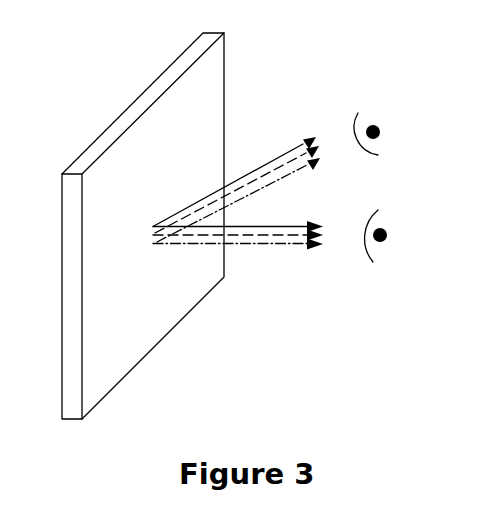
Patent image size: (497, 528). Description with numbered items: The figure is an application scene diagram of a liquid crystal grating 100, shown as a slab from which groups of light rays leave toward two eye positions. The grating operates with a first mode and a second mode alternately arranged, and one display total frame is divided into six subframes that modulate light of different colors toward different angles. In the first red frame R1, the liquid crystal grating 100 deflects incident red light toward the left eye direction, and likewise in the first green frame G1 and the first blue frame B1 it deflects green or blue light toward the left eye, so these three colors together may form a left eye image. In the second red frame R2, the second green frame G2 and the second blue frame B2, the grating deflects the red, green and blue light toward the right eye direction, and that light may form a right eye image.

The liquid crystal grating 100 is at (147, 353).
The first red frame R1 is at (252, 221).
The first green frame G1 is at (252, 234).
The first blue frame B1 is at (251, 249).
The second red frame R2 is at (251, 172).
The second green frame G2 is at (253, 182).
The second blue frame B2 is at (253, 194).